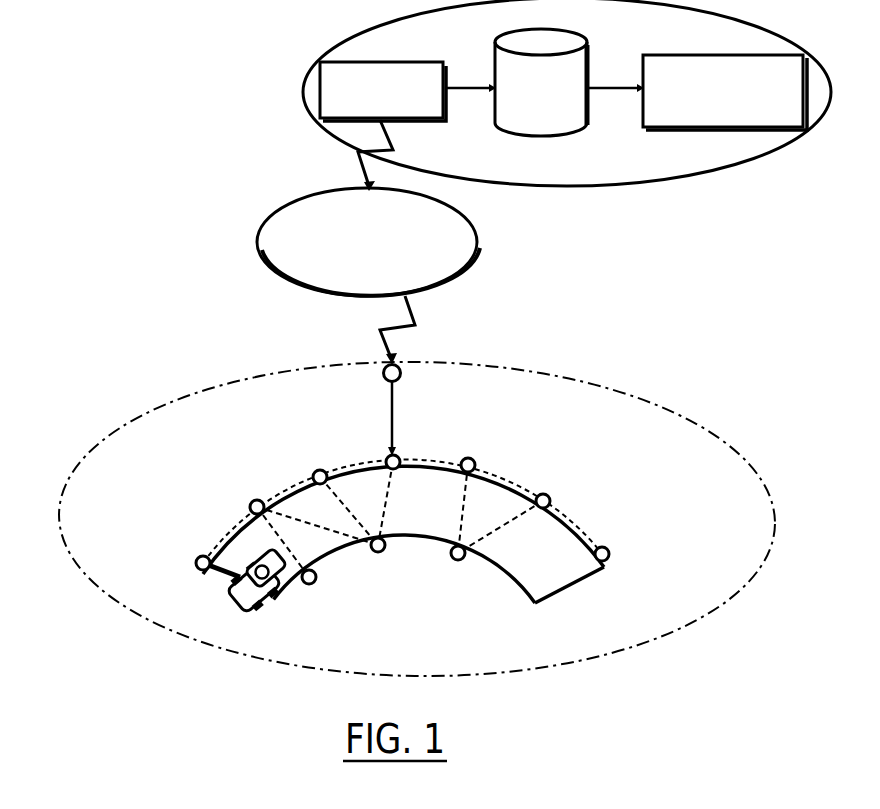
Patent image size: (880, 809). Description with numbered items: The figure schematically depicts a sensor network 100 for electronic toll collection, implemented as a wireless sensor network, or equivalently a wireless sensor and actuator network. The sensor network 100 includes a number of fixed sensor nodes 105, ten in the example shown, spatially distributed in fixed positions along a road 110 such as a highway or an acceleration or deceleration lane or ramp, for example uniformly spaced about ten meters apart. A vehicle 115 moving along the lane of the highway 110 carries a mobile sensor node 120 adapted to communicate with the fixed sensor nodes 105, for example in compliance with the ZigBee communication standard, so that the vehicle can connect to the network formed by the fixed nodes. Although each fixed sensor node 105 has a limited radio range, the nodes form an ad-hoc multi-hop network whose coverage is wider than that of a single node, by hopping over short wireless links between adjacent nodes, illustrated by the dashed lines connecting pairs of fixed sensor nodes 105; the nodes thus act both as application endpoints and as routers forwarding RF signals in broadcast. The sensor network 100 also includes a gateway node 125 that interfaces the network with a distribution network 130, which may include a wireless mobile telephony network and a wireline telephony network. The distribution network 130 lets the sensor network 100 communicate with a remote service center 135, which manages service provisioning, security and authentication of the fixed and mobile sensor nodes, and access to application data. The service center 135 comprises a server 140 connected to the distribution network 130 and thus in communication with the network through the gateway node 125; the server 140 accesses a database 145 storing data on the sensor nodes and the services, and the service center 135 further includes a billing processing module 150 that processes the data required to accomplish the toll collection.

The sensor network 100 is at (108, 598).
The fixed sensor nodes 105 is at (412, 515).
The road 110 is at (563, 597).
The vehicle 115 is at (240, 600).
The mobile sensor node 120 is at (272, 600).
The gateway node 125 is at (383, 377).
The distribution network 130 is at (258, 246).
The service center 135 is at (587, 188).
The server 140 is at (322, 98).
The database 145 is at (522, 128).
The billing processing module 150 is at (672, 128).